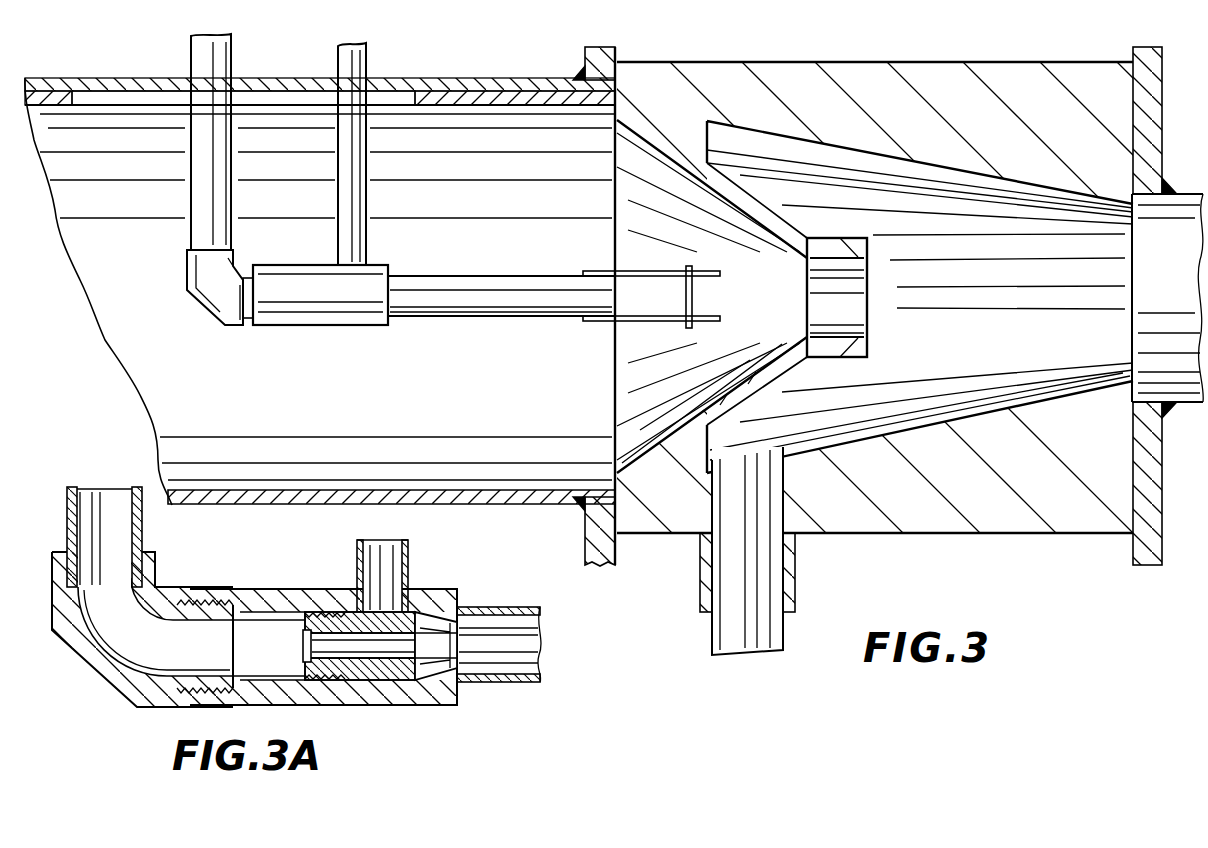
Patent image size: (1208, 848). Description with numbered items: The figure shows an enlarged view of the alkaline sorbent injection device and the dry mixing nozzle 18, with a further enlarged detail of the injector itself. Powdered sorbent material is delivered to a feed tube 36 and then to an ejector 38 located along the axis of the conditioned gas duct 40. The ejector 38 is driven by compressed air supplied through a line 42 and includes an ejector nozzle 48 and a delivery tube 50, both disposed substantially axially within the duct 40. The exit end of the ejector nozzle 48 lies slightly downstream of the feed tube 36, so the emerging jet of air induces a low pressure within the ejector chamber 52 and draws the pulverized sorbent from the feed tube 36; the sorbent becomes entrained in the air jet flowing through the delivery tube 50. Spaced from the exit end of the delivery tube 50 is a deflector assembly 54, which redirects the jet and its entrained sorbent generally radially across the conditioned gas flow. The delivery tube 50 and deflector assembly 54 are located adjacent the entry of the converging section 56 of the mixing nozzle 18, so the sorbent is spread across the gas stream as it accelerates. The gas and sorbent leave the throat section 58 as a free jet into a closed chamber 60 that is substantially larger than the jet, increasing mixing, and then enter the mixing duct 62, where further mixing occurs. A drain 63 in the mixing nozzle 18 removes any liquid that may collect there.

In FIG. 3, the dry mixing nozzle 18 is at (906, 535).
In FIG. 3, the feed tube 36 is at (366, 66).
In FIG. 3A, the feed tube 36 is at (408, 562).
In FIG. 3, the ejector 38 is at (332, 320).
In FIG. 3A, the ejector 38 is at (290, 560).
In FIG. 3, the conditioned gas duct 40 is at (498, 103).
In FIG. 3, the line 42 is at (232, 60).
In FIG. 3A, the line 42 is at (143, 528).
In FIG. 3A, the ejector nozzle 48 is at (365, 680).
In FIG. 3, the delivery tube 50 is at (452, 318).
In FIG. 3A, the delivery tube 50 is at (500, 683).
In FIG. 3A, the ejector chamber 52 is at (396, 675).
In FIG. 3, the deflector assembly 54 is at (686, 294).
In FIG. 3, the converging section 56 is at (715, 398).
In FIG. 3, the throat section 58 is at (842, 337).
In FIG. 3, the closed chamber 60 is at (948, 424).
In FIG. 3, the mixing duct 62 is at (1185, 196).
In FIG. 3, the drain 63 is at (798, 573).